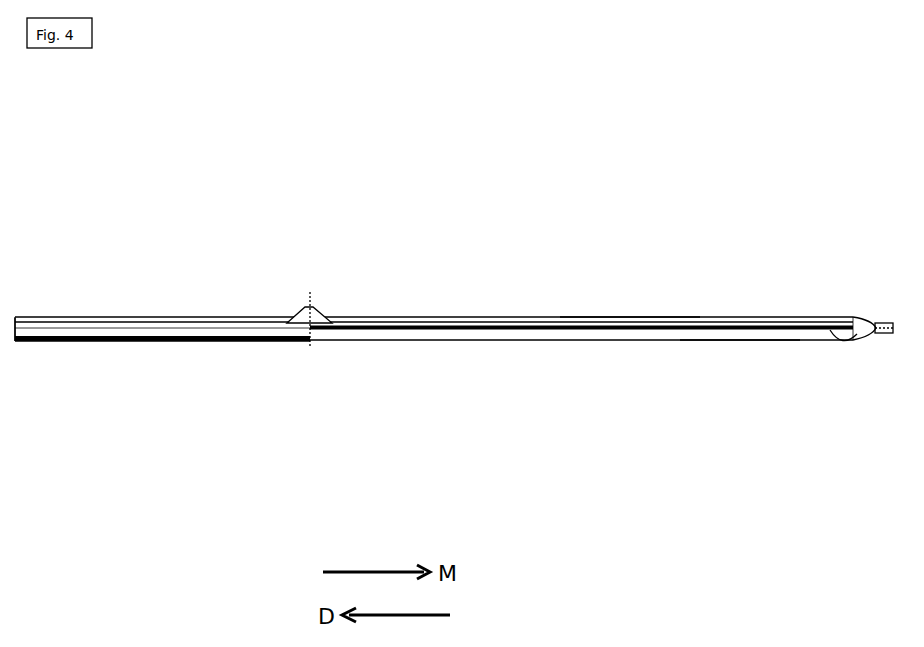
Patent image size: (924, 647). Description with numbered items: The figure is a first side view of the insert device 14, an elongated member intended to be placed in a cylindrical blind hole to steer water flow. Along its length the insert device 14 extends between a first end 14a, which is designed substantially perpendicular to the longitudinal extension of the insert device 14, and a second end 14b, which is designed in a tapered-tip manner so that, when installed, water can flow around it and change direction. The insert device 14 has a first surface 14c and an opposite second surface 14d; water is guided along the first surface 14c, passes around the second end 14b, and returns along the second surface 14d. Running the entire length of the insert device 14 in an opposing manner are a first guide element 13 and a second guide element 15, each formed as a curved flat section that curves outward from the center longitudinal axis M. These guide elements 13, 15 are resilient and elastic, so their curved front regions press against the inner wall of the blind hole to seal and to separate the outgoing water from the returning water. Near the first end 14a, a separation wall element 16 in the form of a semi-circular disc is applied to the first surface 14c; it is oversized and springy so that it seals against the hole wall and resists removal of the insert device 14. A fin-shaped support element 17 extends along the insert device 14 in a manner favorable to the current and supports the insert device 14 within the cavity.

The first guide element 13 is at (500, 316).
The insert device 14 is at (454, 295).
The first end 14a is at (20, 332).
The second end 14b is at (855, 333).
The first surface 14c is at (742, 333).
The second surface 14d is at (638, 318).
The second guide element 15 is at (418, 338).
The separation wall element 16 is at (310, 340).
The support element 17 is at (305, 307).
The center longitudinal axis M is at (843, 327).